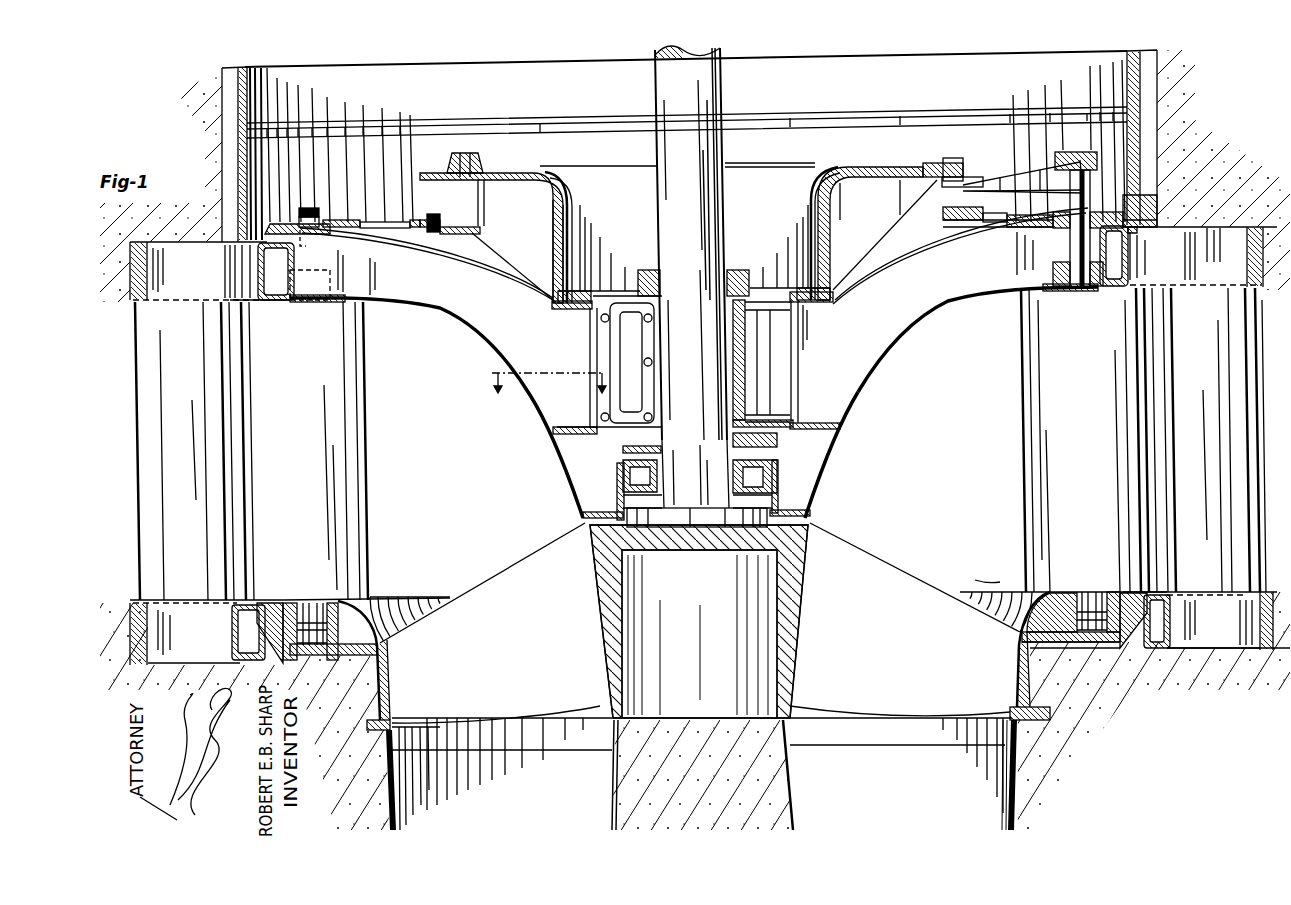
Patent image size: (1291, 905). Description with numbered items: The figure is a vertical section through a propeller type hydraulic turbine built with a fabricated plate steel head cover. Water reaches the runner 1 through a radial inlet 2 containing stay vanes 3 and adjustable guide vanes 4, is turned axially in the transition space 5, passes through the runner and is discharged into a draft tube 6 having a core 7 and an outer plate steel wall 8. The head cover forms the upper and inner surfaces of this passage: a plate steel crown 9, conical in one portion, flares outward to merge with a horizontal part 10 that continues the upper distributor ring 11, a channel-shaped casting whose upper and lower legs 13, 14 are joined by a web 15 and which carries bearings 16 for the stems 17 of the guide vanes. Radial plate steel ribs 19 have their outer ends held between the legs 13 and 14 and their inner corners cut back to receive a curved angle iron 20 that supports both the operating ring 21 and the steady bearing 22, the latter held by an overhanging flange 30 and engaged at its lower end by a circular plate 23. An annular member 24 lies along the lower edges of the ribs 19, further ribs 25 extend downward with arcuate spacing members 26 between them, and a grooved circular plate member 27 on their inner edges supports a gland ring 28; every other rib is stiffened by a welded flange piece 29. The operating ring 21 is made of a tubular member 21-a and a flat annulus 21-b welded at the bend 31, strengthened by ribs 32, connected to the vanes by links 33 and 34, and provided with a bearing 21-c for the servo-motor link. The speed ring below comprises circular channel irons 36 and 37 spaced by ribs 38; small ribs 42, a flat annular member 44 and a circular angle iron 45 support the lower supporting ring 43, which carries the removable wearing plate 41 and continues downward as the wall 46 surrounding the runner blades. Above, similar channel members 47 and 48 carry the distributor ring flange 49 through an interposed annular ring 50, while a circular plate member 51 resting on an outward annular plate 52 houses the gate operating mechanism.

The runner 1 is at (848, 548).
The radial inlet 2 is at (689, 444).
The stay vanes 3 is at (155, 505).
The adjustable guide vanes or wicket gates 4 is at (338, 556).
The transition space 5 is at (953, 520).
The draft tube 6 is at (702, 593).
The core 7 is at (778, 800).
The outer plate steel wall 8 is at (1010, 787).
The plate steel crown 9 is at (851, 400).
The horizontal part 10 is at (982, 298).
The upper distributor ring 11 is at (312, 302).
The upper leg 13 is at (320, 292).
The lower leg 14 is at (314, 241).
The web 15 is at (288, 260).
The bearings 16 is at (423, 222).
The stems 17 is at (1072, 238).
The radial plate steel ribs 19 is at (778, 380).
The angle iron 20 is at (562, 306).
The operating ring 21 is at (580, 166).
The circular plate tubular member 21-a is at (560, 244).
The annulus 21-b is at (873, 172).
The bearing 21-c is at (464, 166).
The steady bearing 22 is at (745, 362).
The circular plate metal piece 23 is at (798, 422).
The annular member 24 is at (777, 445).
The lower ribs 25 is at (810, 468).
The arcuate plate metal spacing members 26 is at (797, 512).
The circular plate member 27 is at (620, 495).
The gland ring 28 is at (622, 462).
The plate metal flange piece 29 is at (386, 240).
The overhanging flange 30 is at (584, 306).
The bend 31 is at (823, 185).
The ribs 32 is at (505, 190).
The connecting links 33 is at (963, 177).
The connecting links 34 is at (1010, 186).
The inner channel iron 36 is at (150, 652).
The outer channel iron 37 is at (236, 636).
The ribs 38 is at (1213, 650).
The lower removable wearing plate 41 is at (1067, 590).
The small ribs 42 is at (1143, 620).
The lower supporting ring 43 is at (1095, 650).
The flat annular member 44 is at (1120, 590).
The circular angle iron 45 is at (1182, 590).
The wall 46 is at (1017, 665).
The upper inner channel member 47 is at (266, 280).
The upper outer channel member 48 is at (135, 287).
The flange 49 is at (1150, 203).
The annular ring 50 is at (1145, 217).
The circular plate metal member 51 is at (1140, 88).
The annular plate 52 is at (1136, 233).